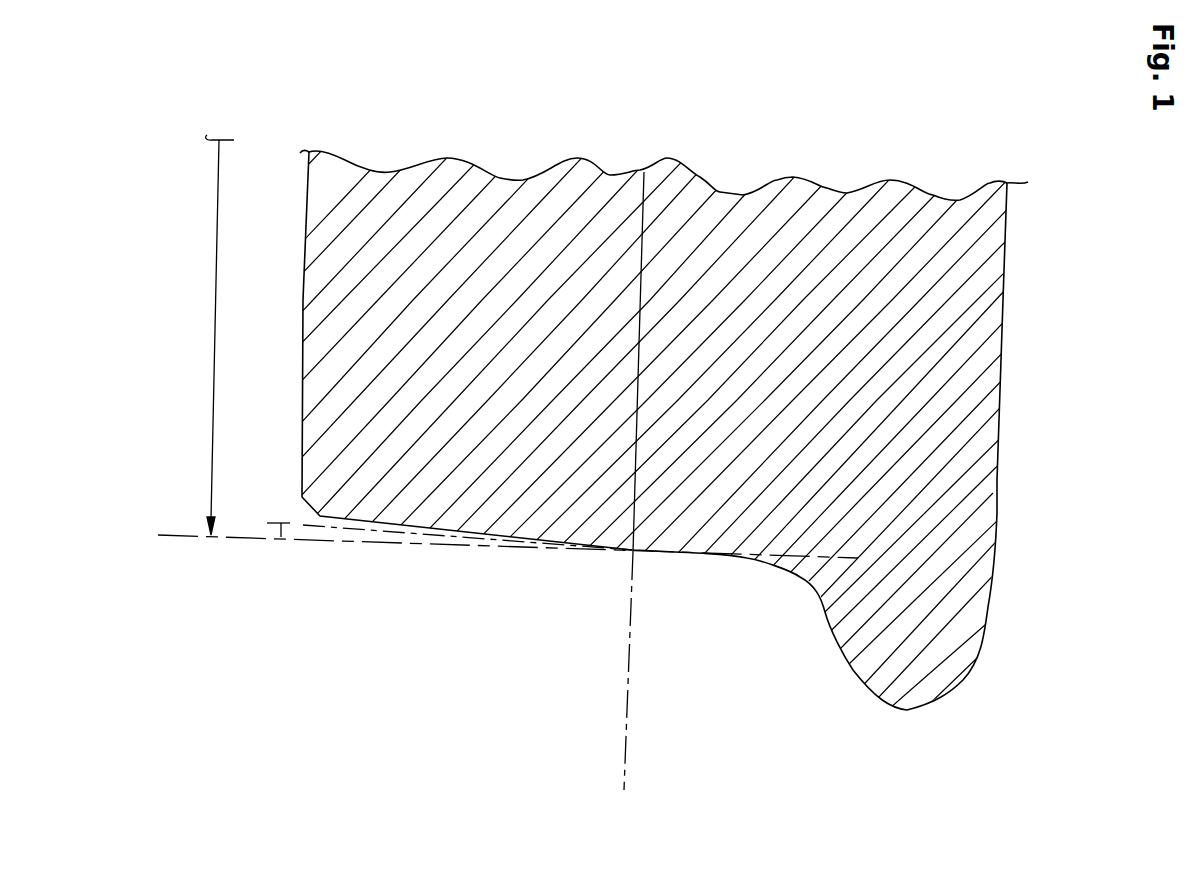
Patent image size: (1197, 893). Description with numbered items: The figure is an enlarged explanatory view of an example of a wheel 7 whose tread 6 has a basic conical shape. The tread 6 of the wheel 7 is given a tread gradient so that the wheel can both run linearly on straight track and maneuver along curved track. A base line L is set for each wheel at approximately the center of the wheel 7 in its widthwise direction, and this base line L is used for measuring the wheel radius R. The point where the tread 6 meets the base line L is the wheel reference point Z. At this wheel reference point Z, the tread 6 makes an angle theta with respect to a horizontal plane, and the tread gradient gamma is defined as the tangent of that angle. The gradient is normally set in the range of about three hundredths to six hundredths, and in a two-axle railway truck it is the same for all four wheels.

The wheel 7 is at (1028, 263).
The tread 6 is at (547, 546).
The base line L is at (645, 247).
The wheel reference point Z is at (635, 552).
The wheel radius R is at (210, 335).